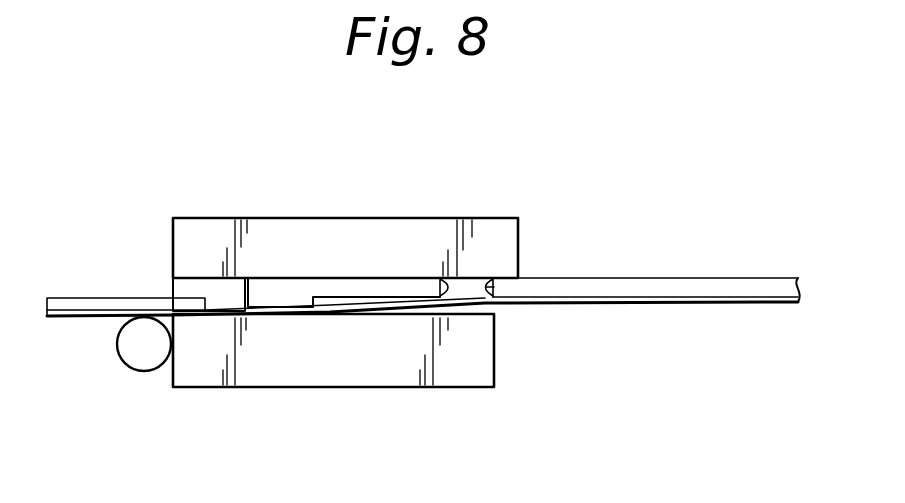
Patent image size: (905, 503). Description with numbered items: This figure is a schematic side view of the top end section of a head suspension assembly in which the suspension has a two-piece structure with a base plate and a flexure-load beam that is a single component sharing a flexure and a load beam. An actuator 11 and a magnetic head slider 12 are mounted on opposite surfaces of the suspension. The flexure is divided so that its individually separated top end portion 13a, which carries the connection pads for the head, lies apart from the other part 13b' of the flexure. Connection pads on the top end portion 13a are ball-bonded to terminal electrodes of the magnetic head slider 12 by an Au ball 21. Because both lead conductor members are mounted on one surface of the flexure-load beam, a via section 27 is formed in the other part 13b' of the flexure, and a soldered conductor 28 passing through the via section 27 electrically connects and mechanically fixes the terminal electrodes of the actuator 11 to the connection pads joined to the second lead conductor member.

The actuator 11 is at (388, 230).
The magnetic head slider 12 is at (357, 374).
The top end portion of the flexure 13a is at (95, 297).
The other part of the flexure 13b' is at (646, 252).
The Au ball 21 is at (143, 350).
The via section 27 is at (494, 287).
The soldered conductor 28 is at (465, 290).